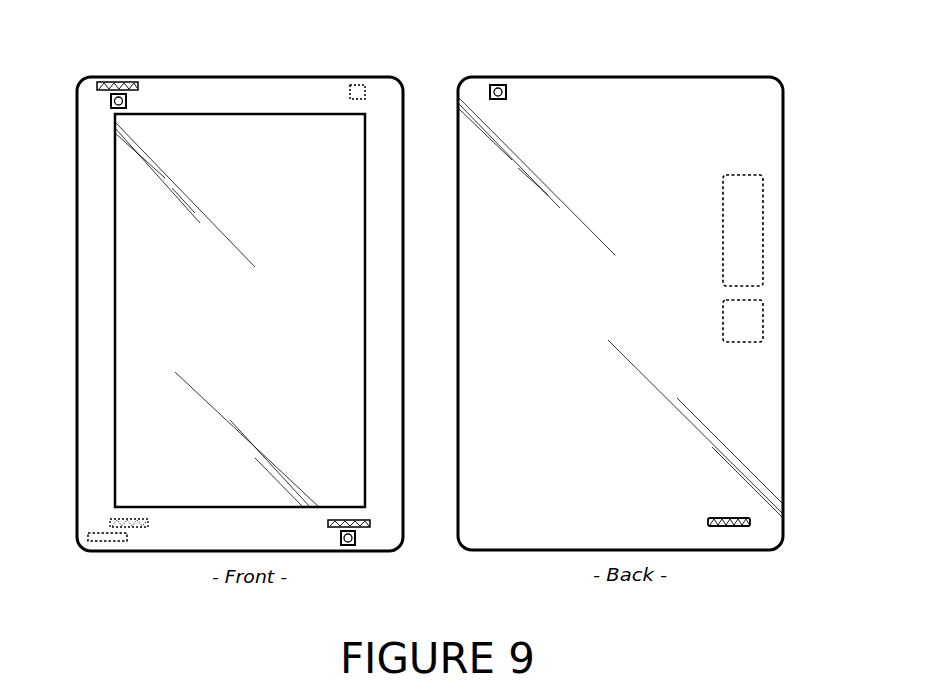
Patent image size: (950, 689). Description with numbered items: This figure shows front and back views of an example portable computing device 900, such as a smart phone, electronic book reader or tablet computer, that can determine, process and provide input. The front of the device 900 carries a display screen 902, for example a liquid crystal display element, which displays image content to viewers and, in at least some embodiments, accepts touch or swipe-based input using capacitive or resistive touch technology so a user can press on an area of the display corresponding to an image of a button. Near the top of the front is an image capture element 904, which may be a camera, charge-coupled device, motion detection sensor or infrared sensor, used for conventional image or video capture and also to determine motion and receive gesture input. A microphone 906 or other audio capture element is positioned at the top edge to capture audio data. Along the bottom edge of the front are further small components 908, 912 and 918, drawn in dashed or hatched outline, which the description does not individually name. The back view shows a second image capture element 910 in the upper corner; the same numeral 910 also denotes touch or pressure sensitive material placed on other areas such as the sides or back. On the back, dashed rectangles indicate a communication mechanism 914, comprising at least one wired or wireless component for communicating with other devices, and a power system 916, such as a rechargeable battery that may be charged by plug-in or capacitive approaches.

The portable computing device 900 is at (810, 80).
The display screen 902 is at (115, 228).
The image capture element 904 is at (110, 99).
The microphone 906 is at (126, 81).
The bottom speaker 908 is at (362, 527).
The image capture element 910 is at (352, 85).
The rear speaker 912 is at (128, 527).
The communication mechanism 914 is at (763, 248).
The power system 916 is at (763, 322).
The connector port 918 is at (104, 545).